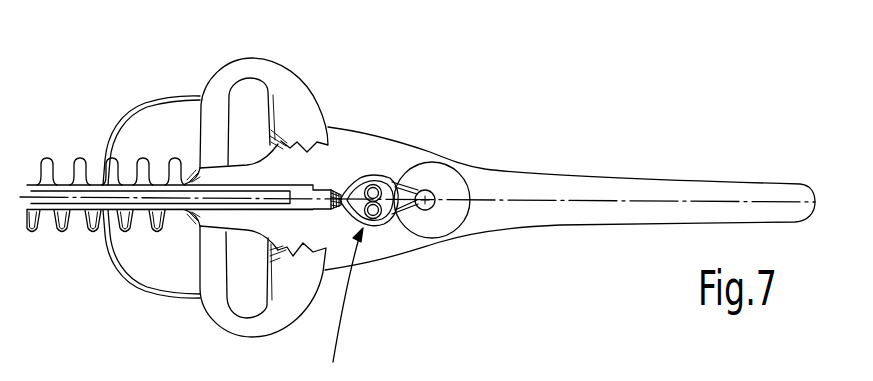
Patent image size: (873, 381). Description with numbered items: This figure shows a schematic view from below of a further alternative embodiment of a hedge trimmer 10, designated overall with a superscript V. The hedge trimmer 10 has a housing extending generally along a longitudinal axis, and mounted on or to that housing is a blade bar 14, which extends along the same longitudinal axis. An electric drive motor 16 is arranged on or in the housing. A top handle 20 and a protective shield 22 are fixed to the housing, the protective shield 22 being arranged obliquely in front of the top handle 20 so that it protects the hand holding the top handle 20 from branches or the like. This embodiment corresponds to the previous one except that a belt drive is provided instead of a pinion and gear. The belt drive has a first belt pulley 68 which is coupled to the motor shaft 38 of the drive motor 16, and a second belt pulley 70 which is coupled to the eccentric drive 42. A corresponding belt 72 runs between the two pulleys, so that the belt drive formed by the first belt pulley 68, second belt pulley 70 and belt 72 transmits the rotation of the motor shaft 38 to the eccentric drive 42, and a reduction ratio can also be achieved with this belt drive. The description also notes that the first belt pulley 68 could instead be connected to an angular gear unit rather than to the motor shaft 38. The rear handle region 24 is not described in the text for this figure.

The hedge trimmer 10 is at (667, 140).
The blade bar 14 is at (65, 236).
The electric drive motor 16 is at (417, 222).
The top handle 20 is at (248, 68).
The protective shield 22 is at (122, 111).
The rear handle 24 is at (677, 190).
The motor shaft 38 is at (485, 170).
The eccentric drive 42 is at (346, 304).
The first belt pulley 68 is at (430, 197).
The second belt pulley 70 is at (376, 173).
The belt 72 is at (423, 191).